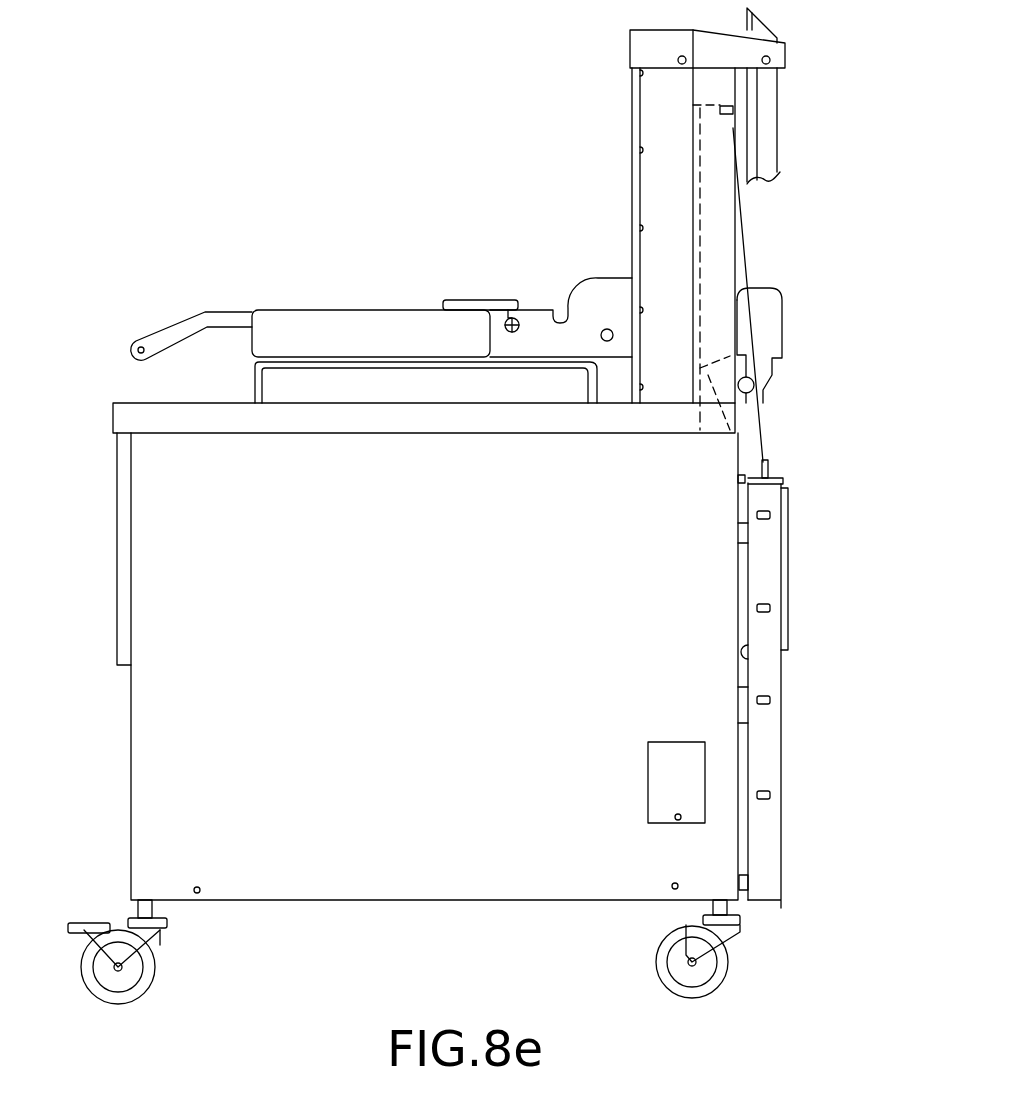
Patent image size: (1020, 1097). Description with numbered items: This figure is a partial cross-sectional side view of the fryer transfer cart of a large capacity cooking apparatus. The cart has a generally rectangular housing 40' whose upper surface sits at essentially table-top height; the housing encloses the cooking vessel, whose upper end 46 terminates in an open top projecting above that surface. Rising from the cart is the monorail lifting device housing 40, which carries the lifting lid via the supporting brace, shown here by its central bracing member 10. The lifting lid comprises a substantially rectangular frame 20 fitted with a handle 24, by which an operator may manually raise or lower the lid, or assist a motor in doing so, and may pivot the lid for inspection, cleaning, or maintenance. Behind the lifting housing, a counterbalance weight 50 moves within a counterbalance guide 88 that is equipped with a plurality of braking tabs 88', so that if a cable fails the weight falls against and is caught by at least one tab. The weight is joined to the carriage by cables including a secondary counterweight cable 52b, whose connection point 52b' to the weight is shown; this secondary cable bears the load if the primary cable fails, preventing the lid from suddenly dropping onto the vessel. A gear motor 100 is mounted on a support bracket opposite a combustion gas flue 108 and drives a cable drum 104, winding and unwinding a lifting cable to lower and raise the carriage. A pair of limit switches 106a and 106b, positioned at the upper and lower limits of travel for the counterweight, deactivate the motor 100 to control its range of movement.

The central bracing member 10 is at (592, 274).
The frame 20 is at (350, 309).
The handle 24 is at (172, 324).
The monorail lifting device housing 40 is at (670, 230).
The housing 40' is at (434, 666).
The upper end of vessel 46 is at (465, 388).
The counterbalance weight 50 is at (788, 568).
The secondary counterweight cable 52b is at (801, 295).
The cable connection point 52b' is at (816, 475).
The counterbalance guide 88 is at (808, 696).
The braking tabs 88' is at (811, 687).
The gear motor 100 is at (773, 290).
The cable drum 104 is at (762, 410).
The limit switch 106a is at (737, 480).
The limit switch 106b is at (748, 882).
The combustion gas flue 108 is at (778, 118).